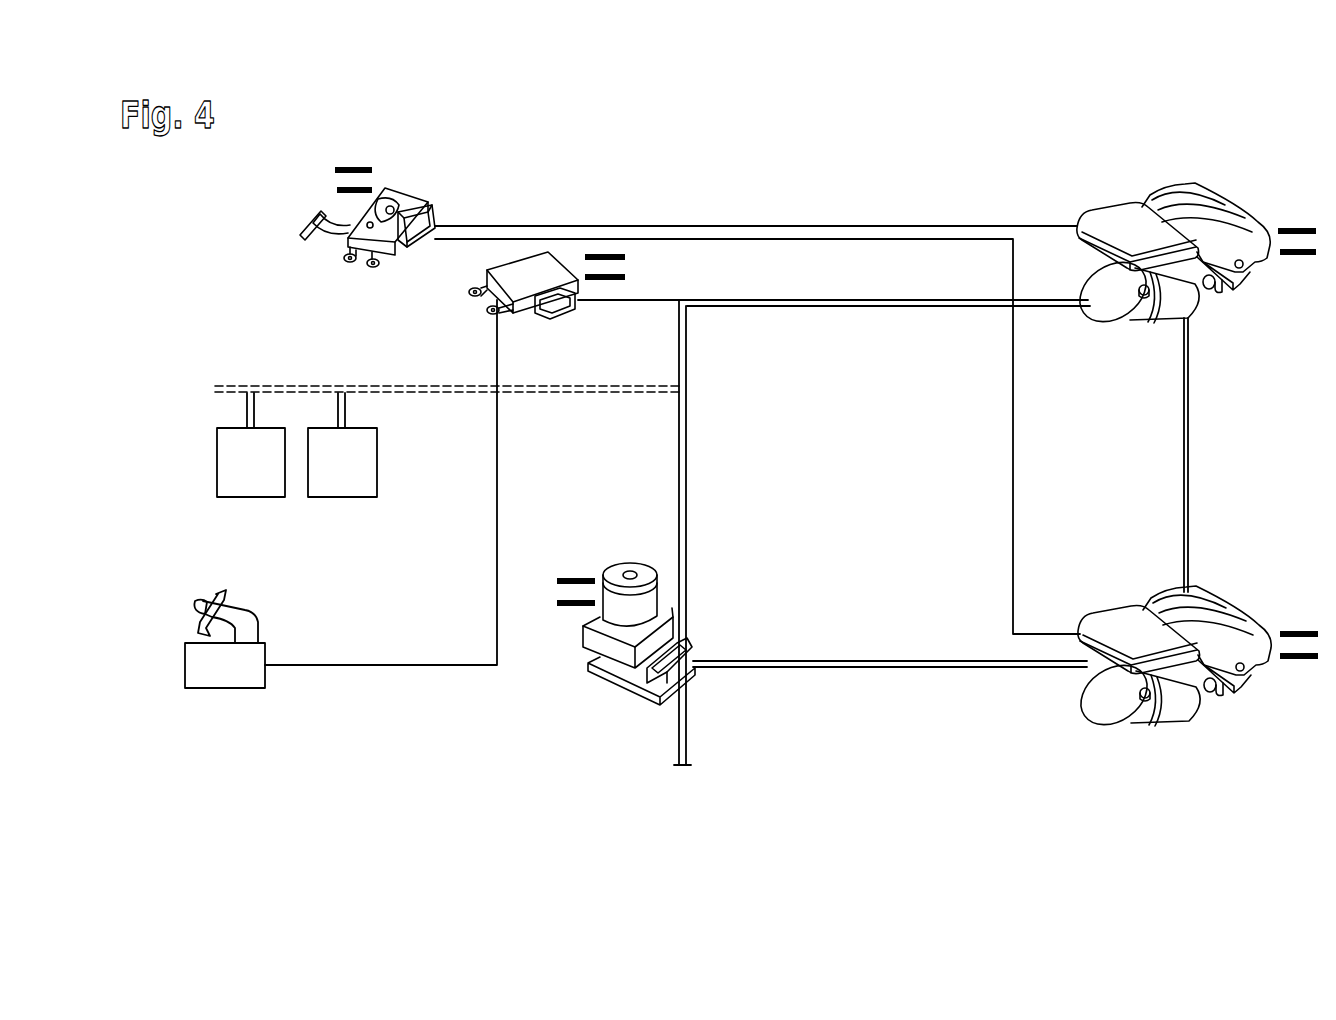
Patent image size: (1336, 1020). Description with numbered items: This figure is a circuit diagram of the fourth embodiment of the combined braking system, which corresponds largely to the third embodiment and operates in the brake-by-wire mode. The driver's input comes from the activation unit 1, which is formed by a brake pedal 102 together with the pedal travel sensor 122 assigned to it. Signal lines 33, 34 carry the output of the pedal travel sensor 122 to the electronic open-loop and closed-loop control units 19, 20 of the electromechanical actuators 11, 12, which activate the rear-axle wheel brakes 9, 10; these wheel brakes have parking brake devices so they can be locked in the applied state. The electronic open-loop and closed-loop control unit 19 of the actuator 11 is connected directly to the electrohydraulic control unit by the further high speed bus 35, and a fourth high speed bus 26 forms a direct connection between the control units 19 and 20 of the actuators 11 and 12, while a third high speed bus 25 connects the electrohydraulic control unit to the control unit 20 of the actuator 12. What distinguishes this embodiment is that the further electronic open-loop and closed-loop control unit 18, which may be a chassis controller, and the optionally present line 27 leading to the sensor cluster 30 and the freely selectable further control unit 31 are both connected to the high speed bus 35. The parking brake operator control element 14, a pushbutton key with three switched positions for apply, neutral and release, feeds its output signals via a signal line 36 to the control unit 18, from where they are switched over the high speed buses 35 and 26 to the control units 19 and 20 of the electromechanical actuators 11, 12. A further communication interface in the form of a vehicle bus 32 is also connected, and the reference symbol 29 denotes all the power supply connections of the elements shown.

The activation unit 1 is at (339, 228).
The wheel brake 9 is at (1215, 196).
The wheel brake 10 is at (1243, 615).
The electromechanical actuator 11 is at (1113, 312).
The electromechanical actuator 12 is at (1120, 712).
The operator control element 14 is at (256, 632).
The further electronic open-loop and closed-loop control unit 18 is at (480, 271).
The electronic open-loop and closed-loop control unit 19 is at (1128, 206).
The electronic open-loop and closed-loop control unit 20 is at (1130, 610).
The third high speed bus 25 is at (946, 660).
The fourth high speed bus 26 is at (1190, 387).
The line 27 is at (407, 385).
The power supply connections 29 is at (352, 166).
The sensor cluster 30 is at (378, 486).
The further electronic open-loop and closed-loop control unit 31 is at (215, 486).
The vehicle bus 32 is at (690, 748).
The signal line 33 is at (945, 225).
The signal line 34 is at (1012, 481).
The further high speed bus 35 is at (947, 308).
The signal line 36 is at (418, 664).
The brake pedal 102 is at (303, 224).
The pedal travel sensor 122 is at (405, 190).